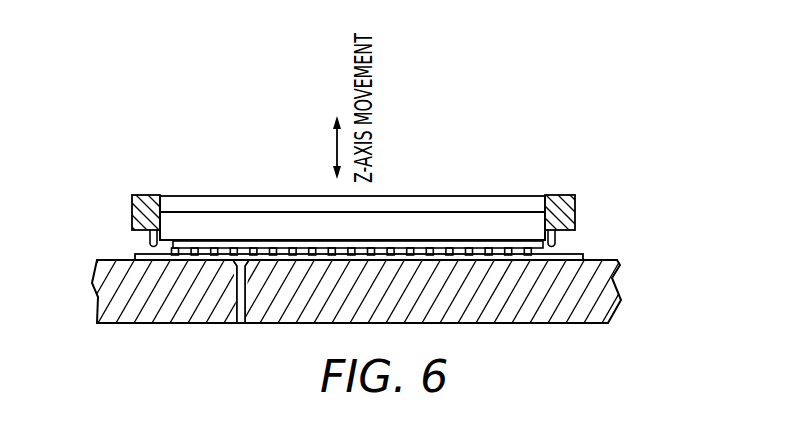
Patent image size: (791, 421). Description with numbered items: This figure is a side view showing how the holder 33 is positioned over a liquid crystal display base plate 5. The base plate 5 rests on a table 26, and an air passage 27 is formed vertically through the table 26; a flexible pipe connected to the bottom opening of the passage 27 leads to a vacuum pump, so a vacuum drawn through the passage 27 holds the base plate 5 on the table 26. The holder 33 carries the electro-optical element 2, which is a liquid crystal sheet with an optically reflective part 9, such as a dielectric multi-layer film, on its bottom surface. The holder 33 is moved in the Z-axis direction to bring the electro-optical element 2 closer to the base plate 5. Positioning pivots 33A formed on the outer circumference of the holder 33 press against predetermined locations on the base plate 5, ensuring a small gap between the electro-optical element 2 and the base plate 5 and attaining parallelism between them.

The electro-optical element 2 is at (352, 194).
The liquid crystal display base plate 5 is at (598, 254).
The optically reflective part 9 is at (358, 204).
The table 26 is at (364, 295).
The air passage 27 is at (262, 316).
The holder 33 is at (358, 197).
The positioning pivots 33A is at (150, 239).